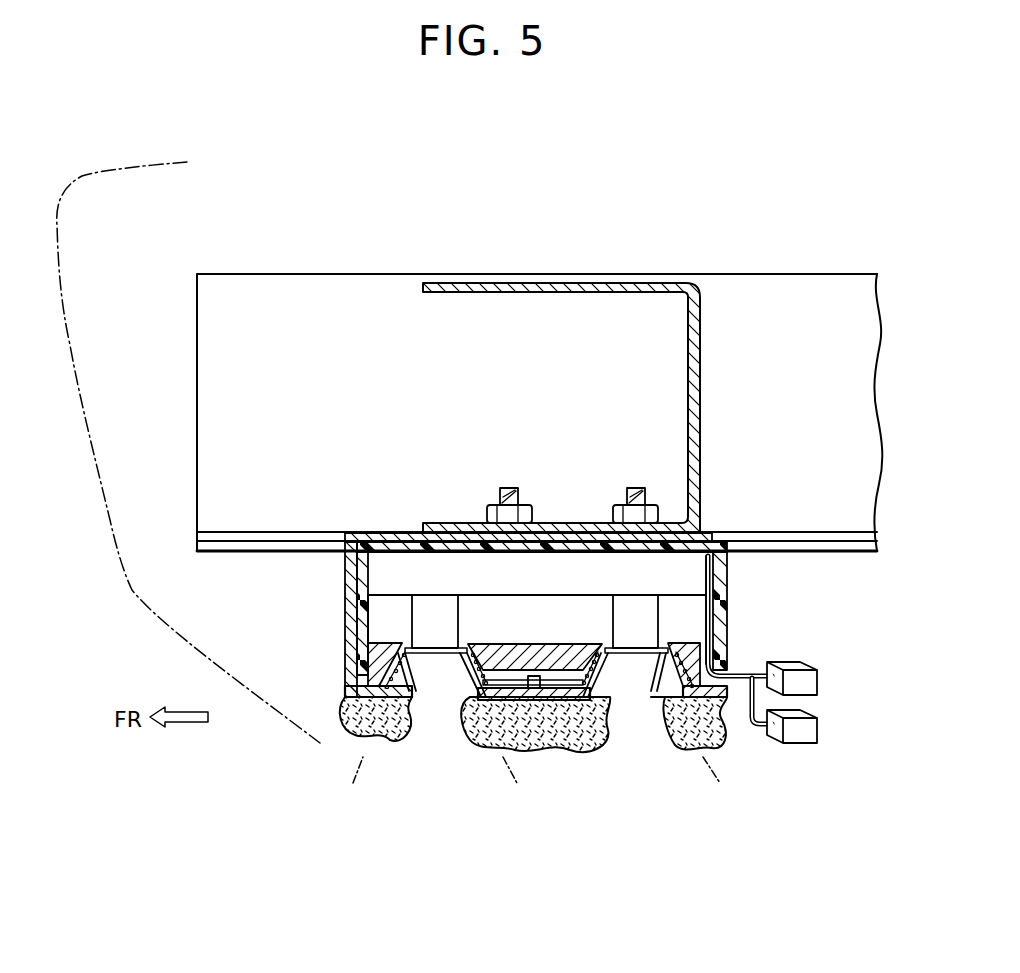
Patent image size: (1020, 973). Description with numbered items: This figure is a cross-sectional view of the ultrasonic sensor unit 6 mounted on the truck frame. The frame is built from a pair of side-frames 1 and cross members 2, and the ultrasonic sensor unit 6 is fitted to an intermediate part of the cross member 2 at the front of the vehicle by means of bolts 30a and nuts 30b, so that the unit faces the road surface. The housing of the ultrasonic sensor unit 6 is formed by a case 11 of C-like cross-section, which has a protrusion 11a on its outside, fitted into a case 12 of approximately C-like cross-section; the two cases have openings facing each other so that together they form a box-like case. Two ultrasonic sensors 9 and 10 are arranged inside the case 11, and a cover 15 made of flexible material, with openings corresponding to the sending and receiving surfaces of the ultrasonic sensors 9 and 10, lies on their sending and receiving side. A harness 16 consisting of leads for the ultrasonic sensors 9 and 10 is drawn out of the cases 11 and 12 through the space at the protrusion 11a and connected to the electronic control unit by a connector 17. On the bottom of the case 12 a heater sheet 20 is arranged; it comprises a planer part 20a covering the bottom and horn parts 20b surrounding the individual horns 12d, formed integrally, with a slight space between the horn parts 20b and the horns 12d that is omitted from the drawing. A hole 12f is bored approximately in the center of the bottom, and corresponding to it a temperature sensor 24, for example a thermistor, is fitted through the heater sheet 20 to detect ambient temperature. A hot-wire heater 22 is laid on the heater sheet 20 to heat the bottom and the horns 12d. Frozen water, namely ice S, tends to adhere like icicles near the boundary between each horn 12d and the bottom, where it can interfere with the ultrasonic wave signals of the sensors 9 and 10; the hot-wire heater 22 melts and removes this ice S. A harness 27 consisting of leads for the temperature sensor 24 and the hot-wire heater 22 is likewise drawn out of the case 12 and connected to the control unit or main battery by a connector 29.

The side-frame 1 is at (345, 290).
The cross member 2 is at (697, 354).
The ultrasonic sensor unit 6 is at (750, 595).
The ultrasonic sensor 9 is at (436, 655).
The ultrasonic sensor 10 is at (633, 655).
The case 11 is at (358, 590).
The protrusion 11a is at (723, 562).
The case 12 is at (345, 572).
The horn 12d is at (402, 733).
The hole 12f is at (533, 750).
The cover 15 is at (370, 648).
The harness 16 is at (752, 668).
The connector 17 is at (808, 681).
The heater sheet 20 is at (373, 680).
The planer part 20a is at (505, 735).
The horn part 20b is at (469, 731).
The hot-wire heater 22 is at (700, 650).
The temperature sensor 24 is at (550, 748).
The harness 27 is at (751, 720).
The connector 29 is at (808, 731).
The bolt 30a is at (508, 493).
The nut 30b is at (487, 514).
The ice S is at (352, 733).